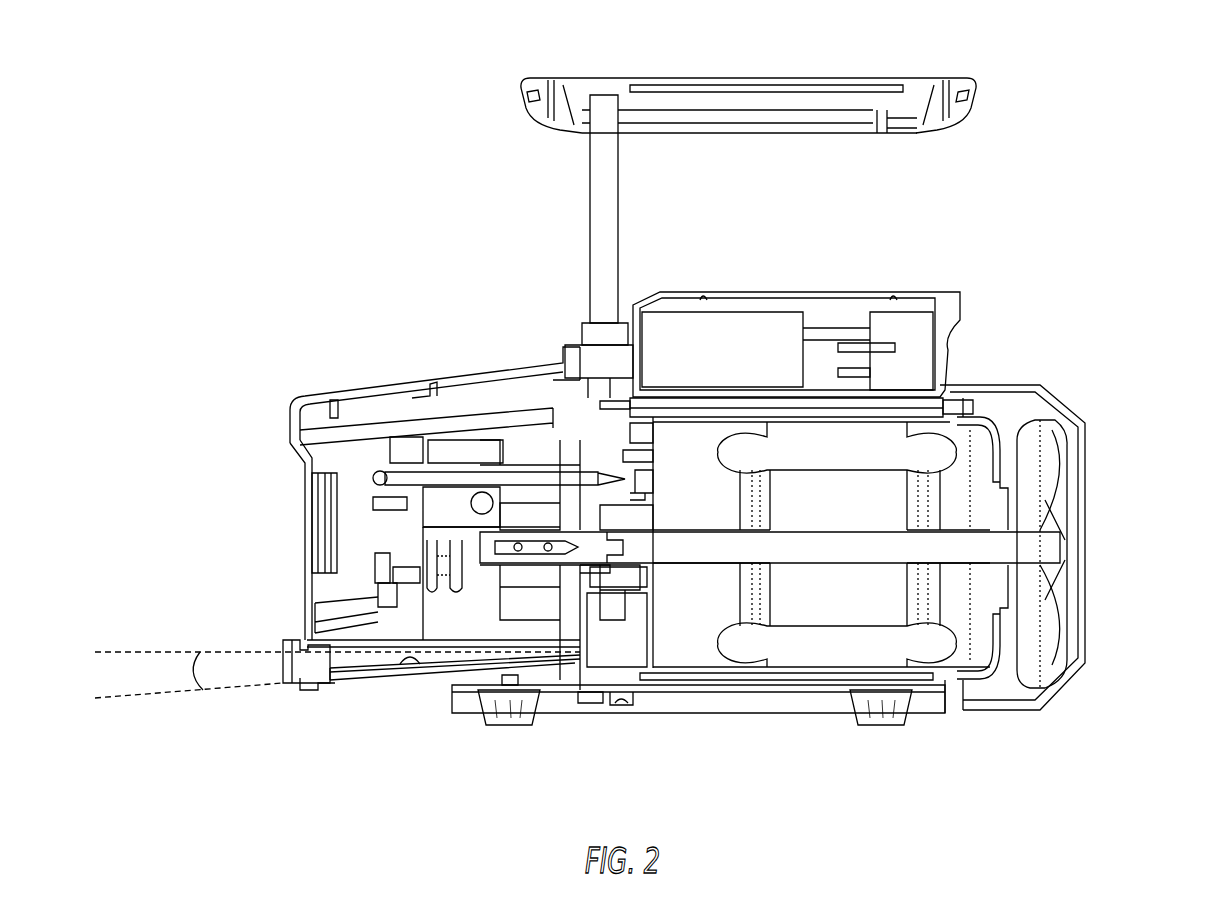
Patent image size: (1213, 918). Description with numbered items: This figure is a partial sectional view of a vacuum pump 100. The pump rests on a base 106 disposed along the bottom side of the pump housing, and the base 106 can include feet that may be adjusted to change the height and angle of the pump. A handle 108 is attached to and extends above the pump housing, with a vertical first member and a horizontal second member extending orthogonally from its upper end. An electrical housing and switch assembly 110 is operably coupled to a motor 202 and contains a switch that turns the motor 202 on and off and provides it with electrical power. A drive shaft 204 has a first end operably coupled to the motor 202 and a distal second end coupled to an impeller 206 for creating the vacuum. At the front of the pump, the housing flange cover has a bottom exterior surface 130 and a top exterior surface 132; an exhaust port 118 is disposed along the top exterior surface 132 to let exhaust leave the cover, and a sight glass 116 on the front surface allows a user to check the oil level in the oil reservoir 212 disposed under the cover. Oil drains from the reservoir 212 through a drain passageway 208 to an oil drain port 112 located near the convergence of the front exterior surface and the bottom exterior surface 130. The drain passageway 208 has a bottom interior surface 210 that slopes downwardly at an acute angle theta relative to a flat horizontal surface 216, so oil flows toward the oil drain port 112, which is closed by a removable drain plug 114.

The vacuum pump 100 is at (1085, 72).
The base 106 is at (762, 698).
The handle 108 is at (848, 97).
The electrical housing and switch assembly 110 is at (928, 292).
The oil drain port 112 is at (313, 678).
The drain plug 114 is at (290, 645).
The sight glass 116 is at (327, 528).
The exhaust port 118 is at (370, 412).
The bottom exterior surface 130 is at (370, 688).
The top exterior surface 132 is at (483, 370).
The motor 202 is at (540, 575).
The drive shaft 204 is at (700, 548).
The impeller 206 is at (1043, 470).
The drain passageway 208 is at (373, 668).
The bottom interior surface 210 is at (413, 666).
The oil reservoir 212 is at (355, 597).
The flat horizontal surface 216 is at (113, 648).